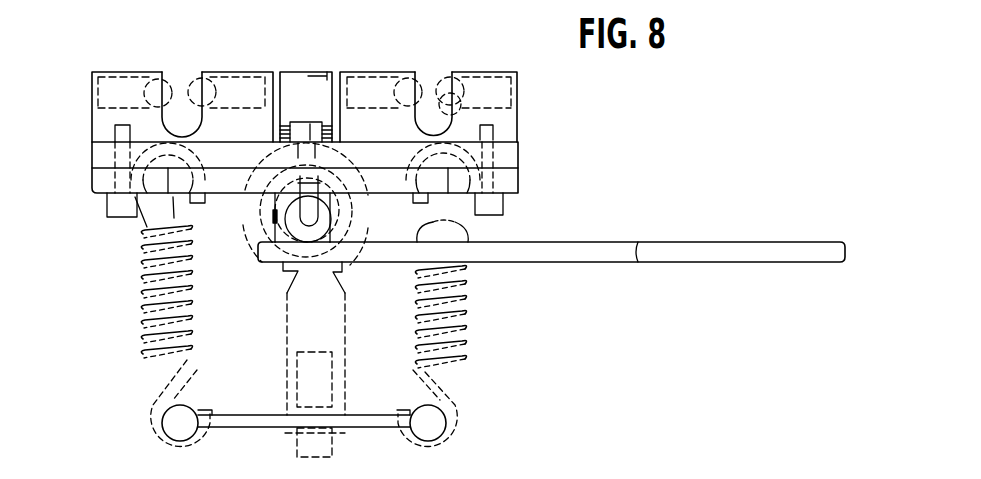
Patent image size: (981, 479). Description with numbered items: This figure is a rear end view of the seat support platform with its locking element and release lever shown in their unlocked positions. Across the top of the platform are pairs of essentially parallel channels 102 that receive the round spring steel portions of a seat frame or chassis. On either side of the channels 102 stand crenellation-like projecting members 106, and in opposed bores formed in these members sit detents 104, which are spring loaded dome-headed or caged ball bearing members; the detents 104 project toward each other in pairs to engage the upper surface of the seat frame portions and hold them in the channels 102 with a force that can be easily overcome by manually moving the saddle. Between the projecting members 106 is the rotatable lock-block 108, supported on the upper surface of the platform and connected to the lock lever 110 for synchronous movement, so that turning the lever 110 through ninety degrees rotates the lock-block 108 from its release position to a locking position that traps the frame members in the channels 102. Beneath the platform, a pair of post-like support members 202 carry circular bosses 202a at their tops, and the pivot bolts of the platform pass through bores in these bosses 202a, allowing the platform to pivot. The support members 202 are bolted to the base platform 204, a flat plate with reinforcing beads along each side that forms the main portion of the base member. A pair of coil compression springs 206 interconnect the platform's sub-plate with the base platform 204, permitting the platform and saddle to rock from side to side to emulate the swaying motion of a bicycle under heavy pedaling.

The channels 102 is at (162, 119).
The detents 104 is at (188, 80).
The crenellation-like projecting members 106 is at (134, 72).
The lock-block 108 is at (307, 93).
The lock lever 110 is at (717, 241).
The post-like support members 202 is at (347, 368).
The circular bosses 202a is at (247, 232).
The base platform 204 is at (247, 413).
The coil compression springs 206 is at (152, 289).